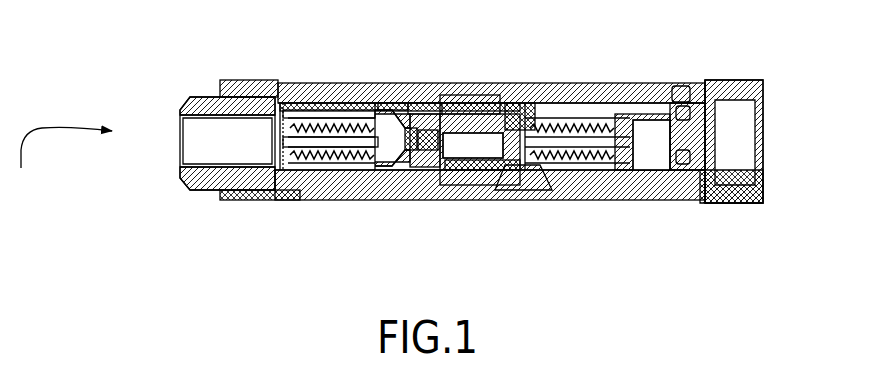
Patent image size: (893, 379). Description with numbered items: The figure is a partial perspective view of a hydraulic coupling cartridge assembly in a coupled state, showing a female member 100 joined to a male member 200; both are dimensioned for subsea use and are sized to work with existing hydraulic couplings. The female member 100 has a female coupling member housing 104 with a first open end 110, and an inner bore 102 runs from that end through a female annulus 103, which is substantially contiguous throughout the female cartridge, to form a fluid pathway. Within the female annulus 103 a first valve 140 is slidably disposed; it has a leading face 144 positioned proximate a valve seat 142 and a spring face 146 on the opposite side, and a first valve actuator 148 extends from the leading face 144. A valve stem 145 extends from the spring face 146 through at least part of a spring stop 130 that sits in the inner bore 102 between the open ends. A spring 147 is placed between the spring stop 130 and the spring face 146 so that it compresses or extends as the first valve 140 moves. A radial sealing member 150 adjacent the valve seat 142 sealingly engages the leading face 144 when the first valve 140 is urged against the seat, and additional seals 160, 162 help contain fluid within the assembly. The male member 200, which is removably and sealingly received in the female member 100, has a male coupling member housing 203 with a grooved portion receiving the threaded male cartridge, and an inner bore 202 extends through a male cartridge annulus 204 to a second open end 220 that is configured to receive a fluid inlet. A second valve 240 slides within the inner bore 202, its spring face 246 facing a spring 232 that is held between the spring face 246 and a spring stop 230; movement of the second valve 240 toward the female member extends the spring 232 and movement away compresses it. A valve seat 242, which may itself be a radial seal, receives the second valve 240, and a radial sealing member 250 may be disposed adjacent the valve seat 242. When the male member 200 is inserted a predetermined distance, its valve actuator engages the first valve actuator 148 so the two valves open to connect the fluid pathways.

The female member 100 is at (306, 78).
The inner bore 102 is at (237, 143).
The female annulus 103 is at (336, 160).
The female coupling member housing 104 is at (212, 174).
The first open end 110 is at (173, 103).
The spring stop 130 is at (287, 165).
The first valve 140 is at (378, 126).
The valve seat 142 is at (389, 157).
The leading face 144 is at (398, 157).
The valve stem 145 is at (293, 143).
The spring face 146 is at (380, 157).
The spring 147 is at (327, 158).
The first valve actuator 148 is at (420, 155).
The radial sealing member 150 is at (384, 125).
The seal 160 is at (452, 108).
The seal 162 is at (416, 110).
The male member 200 is at (593, 226).
The inner bore 202 is at (738, 140).
The male coupling member housing 203 is at (671, 80).
The male cartridge annulus 204 is at (712, 105).
The second open end 220 is at (760, 187).
The spring stop 230 is at (631, 127).
The spring 232 is at (588, 164).
The second valve 240 is at (505, 162).
The valve seat 242 is at (519, 123).
The spring face 246 is at (520, 170).
The radial sealing member 250 is at (524, 122).